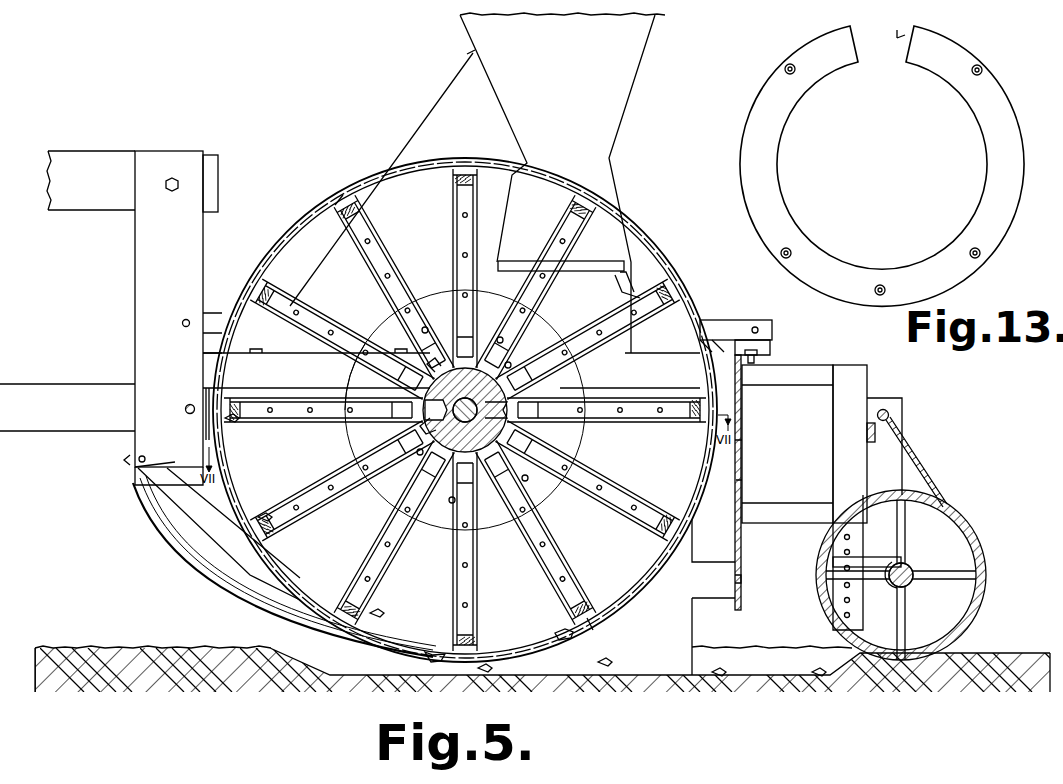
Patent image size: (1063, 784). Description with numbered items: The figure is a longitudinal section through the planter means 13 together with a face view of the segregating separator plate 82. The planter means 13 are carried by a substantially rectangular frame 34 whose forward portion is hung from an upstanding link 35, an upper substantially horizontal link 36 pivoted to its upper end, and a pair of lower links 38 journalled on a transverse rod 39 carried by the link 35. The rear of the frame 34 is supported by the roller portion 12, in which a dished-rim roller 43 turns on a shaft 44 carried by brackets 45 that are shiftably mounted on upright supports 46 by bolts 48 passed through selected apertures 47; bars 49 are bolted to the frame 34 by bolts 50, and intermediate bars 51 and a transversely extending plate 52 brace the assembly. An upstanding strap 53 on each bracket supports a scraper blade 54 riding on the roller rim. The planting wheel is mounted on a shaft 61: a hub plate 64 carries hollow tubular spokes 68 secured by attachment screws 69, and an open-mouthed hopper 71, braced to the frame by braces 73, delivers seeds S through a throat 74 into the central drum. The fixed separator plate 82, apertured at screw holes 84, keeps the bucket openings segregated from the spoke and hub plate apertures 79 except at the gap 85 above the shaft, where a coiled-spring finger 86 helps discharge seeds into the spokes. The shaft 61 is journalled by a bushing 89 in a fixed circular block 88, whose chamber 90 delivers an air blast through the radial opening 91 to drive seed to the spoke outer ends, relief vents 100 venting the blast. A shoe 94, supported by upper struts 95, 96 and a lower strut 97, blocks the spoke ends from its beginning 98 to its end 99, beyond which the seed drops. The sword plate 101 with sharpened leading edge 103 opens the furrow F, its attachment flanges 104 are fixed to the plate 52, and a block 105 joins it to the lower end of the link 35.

In FIG. 5, the roller portion 12 is at (907, 556).
In FIG. 5, the planter means 13 is at (465, 401).
In FIG. 5, the frame 34 is at (285, 380).
In FIG. 5, the upstanding link 35 is at (143, 256).
In FIG. 5, the upper substantially horizontal link 36 is at (70, 165).
In FIG. 5, the lower links 38 is at (56, 390).
In FIG. 5, the transverse rod 39 is at (185, 409).
In FIG. 5, the roller 43 is at (962, 522).
In FIG. 5, the shaft 44 is at (910, 562).
In FIG. 5, the brackets 45 is at (912, 590).
In FIG. 5, the upright supports 46 is at (838, 452).
In FIG. 5, the apertures 47 is at (852, 537).
In FIG. 5, the bolts 48 is at (867, 564).
In FIG. 5, the bars 49 is at (814, 366).
In FIG. 5, the bolts 50 is at (758, 352).
In FIG. 5, the intermediate bars 51 is at (896, 400).
In FIG. 5, the transversely extending plate 52 is at (883, 433).
In FIG. 5, the upstanding strap 53 is at (890, 414).
In FIG. 5, the scraper blade 54 is at (918, 450).
In FIG. 5, the shaft 61 is at (500, 398).
In FIG. 5, the hub plate 64 is at (355, 440).
In FIG. 5, the spokes 68 is at (470, 208).
In FIG. 5, the attachment screws 69 is at (532, 480).
In FIG. 5, the hopper 71 is at (625, 86).
In FIG. 5, the braces 73 is at (378, 210).
In FIG. 5, the throat 74 is at (588, 304).
In FIG. 5, the apertures 79 is at (502, 362).
In FIG. 13, the separator plate 82 is at (768, 162).
In FIG. 13, the screw holes 84 is at (795, 67).
In FIG. 13, the gap 85 is at (897, 38).
In FIG. 5, the finger 86 is at (470, 355).
In FIG. 5, the circular block 88 is at (420, 398).
In FIG. 5, the bushing 89 is at (508, 422).
In FIG. 5, the chamber 90 is at (420, 426).
In FIG. 5, the radial opening 91 is at (433, 368).
In FIG. 5, the shoe 94 is at (652, 255).
In FIG. 5, the upper strut 95 is at (228, 300).
In FIG. 5, the upper strut 96 is at (712, 318).
In FIG. 5, the lower strut 97 is at (202, 522).
In FIG. 5, the beginning point of shoe 98 is at (556, 634).
In FIG. 5, the end of shoe 99 is at (442, 652).
In FIG. 5, the relief vents 100 is at (340, 196).
In FIG. 5, the plate-like element 101 is at (680, 630).
In FIG. 5, the leading edge 103 is at (195, 590).
In FIG. 5, the attachment flanges 104 is at (728, 548).
In FIG. 5, the block 105 is at (135, 477).
In FIG. 5, the furrow F is at (760, 660).
In FIG. 5, the seeds S is at (525, 545).